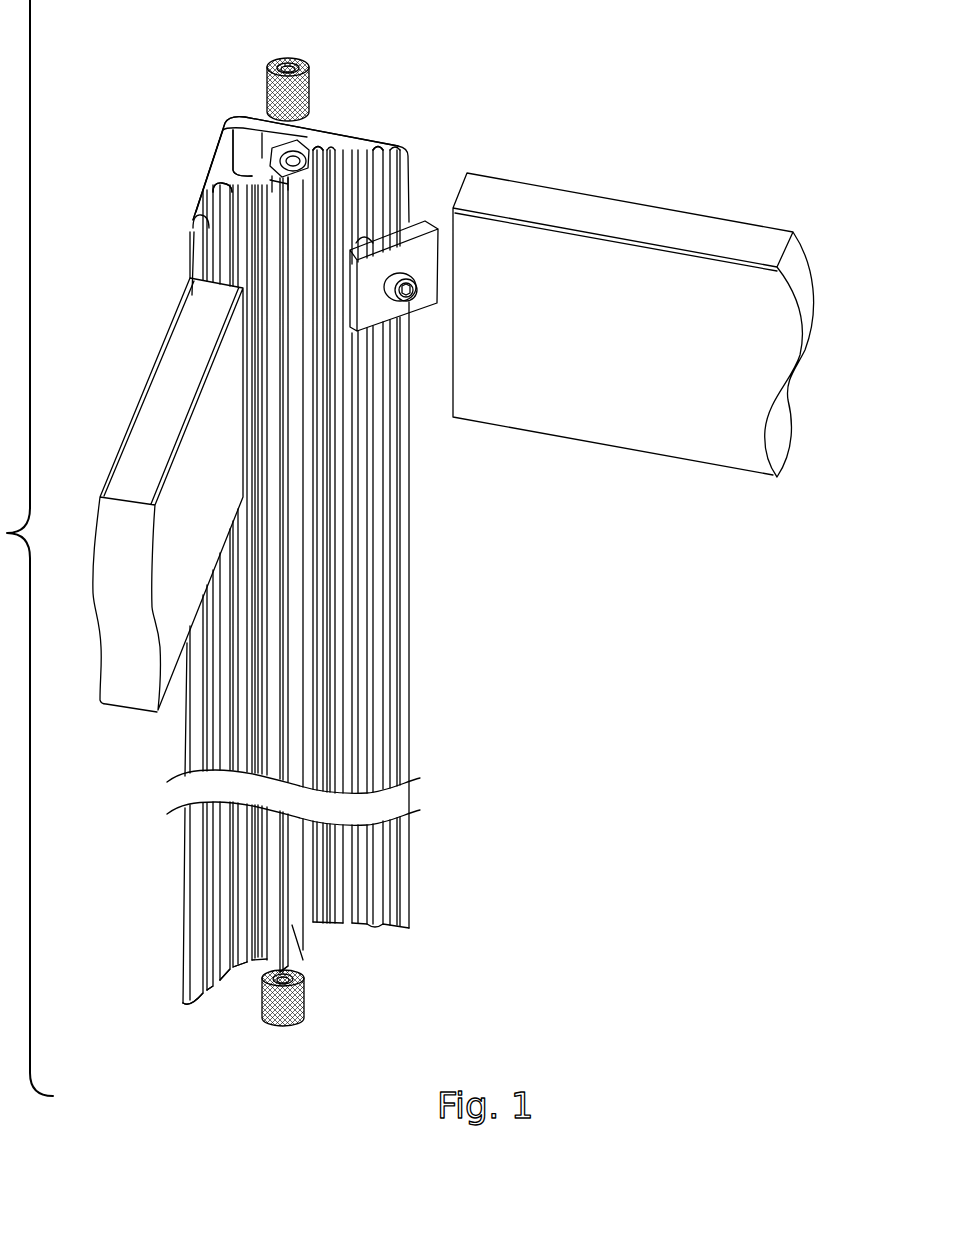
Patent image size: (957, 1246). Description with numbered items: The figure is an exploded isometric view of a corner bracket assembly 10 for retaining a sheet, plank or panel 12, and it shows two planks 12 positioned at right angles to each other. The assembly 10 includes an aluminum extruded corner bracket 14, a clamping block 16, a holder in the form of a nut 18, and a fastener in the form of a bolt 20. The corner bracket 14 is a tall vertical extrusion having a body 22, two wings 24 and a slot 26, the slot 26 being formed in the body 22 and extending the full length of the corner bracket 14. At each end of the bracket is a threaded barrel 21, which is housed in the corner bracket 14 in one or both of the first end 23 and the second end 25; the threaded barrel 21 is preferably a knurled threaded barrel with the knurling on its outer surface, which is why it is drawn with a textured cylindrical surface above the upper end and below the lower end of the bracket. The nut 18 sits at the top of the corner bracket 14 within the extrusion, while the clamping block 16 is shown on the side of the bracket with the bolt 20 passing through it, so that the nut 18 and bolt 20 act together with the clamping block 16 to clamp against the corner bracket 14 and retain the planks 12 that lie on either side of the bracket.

The corner bracket assembly 10 is at (494, 85).
The plank 12 is at (166, 372).
The extruded corner bracket 14 is at (430, 637).
The clamping block 16 is at (424, 224).
The nut 18 is at (303, 145).
The bolt 20 is at (418, 296).
The threaded barrel 21 is at (305, 66).
The body 22 is at (239, 120).
The first end 23 is at (262, 170).
The wings 24 is at (367, 145).
The second end 25 is at (270, 962).
The slot 26 is at (290, 940).